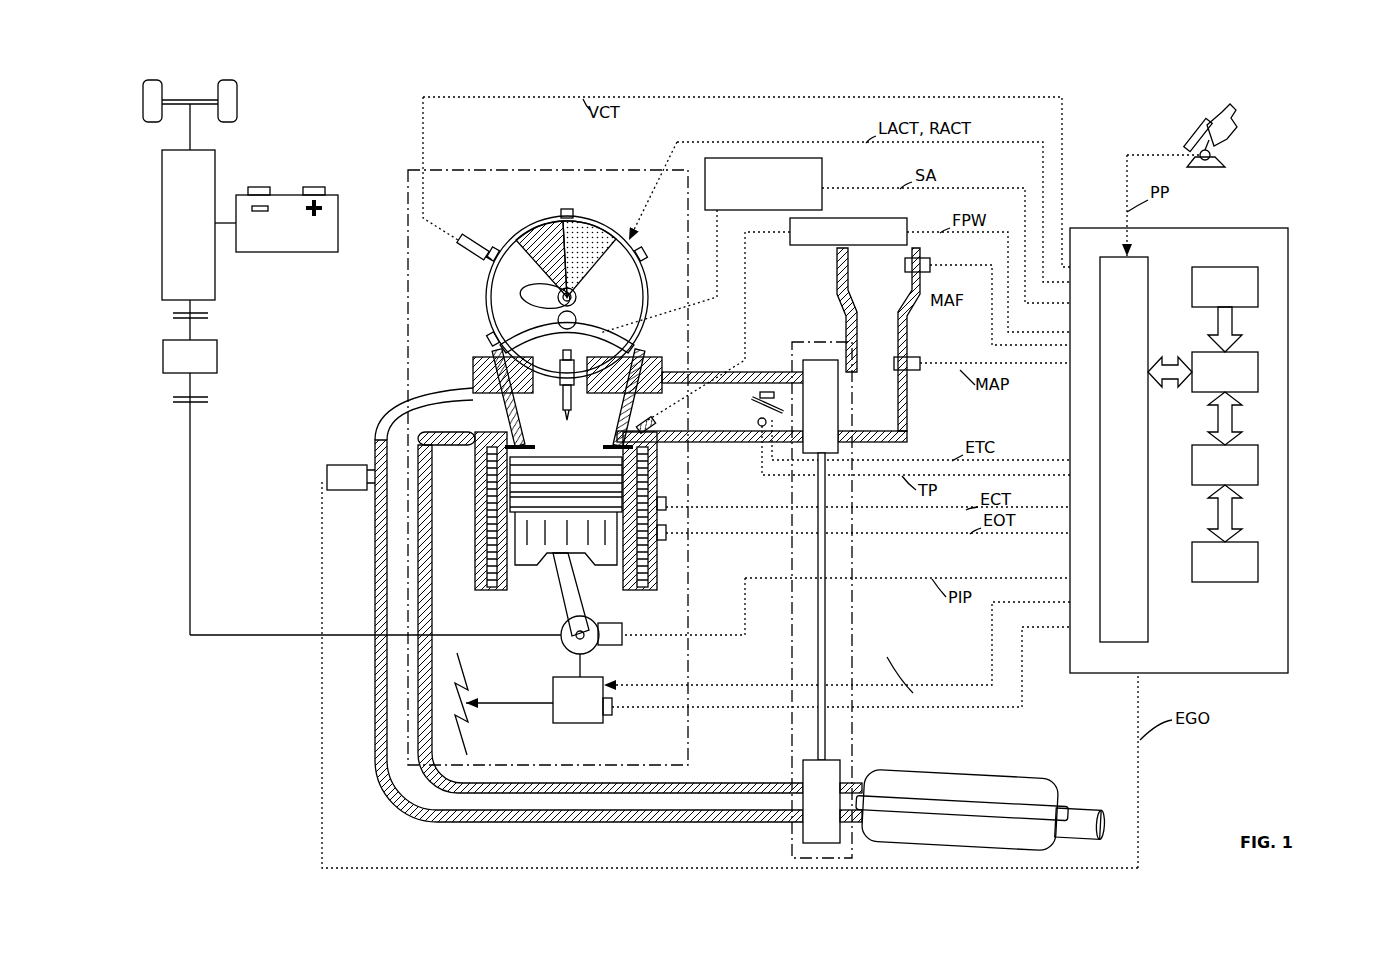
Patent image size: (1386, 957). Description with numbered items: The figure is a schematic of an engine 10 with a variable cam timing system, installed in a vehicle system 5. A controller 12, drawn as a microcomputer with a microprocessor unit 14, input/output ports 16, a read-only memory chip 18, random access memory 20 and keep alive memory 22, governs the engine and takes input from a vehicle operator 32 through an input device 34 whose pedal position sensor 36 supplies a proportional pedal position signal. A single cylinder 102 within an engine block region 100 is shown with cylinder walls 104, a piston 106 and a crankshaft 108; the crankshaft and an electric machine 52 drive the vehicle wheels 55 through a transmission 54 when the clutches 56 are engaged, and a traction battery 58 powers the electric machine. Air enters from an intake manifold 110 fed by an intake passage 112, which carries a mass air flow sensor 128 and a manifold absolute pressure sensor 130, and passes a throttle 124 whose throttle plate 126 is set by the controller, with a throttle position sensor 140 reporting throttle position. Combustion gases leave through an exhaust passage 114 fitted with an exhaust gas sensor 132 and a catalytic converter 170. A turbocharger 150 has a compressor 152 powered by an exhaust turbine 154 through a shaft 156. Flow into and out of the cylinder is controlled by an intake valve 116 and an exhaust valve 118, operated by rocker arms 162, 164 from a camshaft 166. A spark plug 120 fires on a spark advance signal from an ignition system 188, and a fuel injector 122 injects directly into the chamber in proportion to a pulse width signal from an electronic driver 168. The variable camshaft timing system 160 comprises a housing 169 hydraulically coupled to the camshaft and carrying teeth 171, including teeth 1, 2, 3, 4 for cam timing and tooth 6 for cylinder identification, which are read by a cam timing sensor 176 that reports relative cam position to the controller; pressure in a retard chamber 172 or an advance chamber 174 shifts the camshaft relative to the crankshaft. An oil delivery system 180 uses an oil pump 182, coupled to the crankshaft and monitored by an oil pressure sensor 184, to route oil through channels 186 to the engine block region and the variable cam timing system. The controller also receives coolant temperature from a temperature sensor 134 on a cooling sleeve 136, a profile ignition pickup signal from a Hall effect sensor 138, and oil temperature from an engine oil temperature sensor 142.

The tooth 1 is at (562, 212).
The tooth 2 is at (645, 259).
The tooth 3 is at (578, 374).
The tooth 4 is at (487, 341).
The vehicle system 5 is at (212, 778).
The tooth 6 is at (487, 264).
The engine 10 is at (1285, 731).
The controller 12 is at (1282, 238).
The microprocessor unit 14 is at (1260, 372).
The input/output ports 16 is at (1150, 262).
The read-only memory chip 18 is at (1260, 285).
The random access memory 20 is at (1260, 465).
The keep alive memory 22 is at (1260, 560).
The vehicle operator 32 is at (1240, 112).
The input device 34 is at (1188, 132).
The pedal position sensor 36 is at (1212, 158).
The electric machine 52 is at (217, 357).
The transmission 54 is at (216, 172).
The vehicle wheels 55 is at (238, 97).
The clutch 56 is at (173, 315).
The traction battery 58 is at (281, 252).
The engine block region 100 is at (408, 342).
The cylinder 102 is at (475, 460).
The cylinder walls 104 is at (500, 590).
The piston 106 is at (540, 572).
The crankshaft 108 is at (598, 593).
The intake manifold 110 is at (762, 407).
The intake passage 112 is at (878, 339).
The exhaust passage 114 is at (440, 415).
The intake valve 116 is at (625, 394).
The exhaust valve 118 is at (456, 394).
The spark plug 120 is at (560, 372).
The fuel injector 122 is at (682, 450).
The throttle 124 is at (765, 398).
The throttle plate 126 is at (757, 392).
The mass air flow sensor 128 is at (930, 266).
The manifold absolute pressure sensor 130 is at (915, 370).
The exhaust gas sensor 132 is at (327, 470).
The temperature sensor 134 is at (668, 503).
The cooling sleeve 136 is at (657, 585).
The Hall effect sensor 138 is at (636, 607).
The throttle position sensor 140 is at (758, 430).
The engine oil temperature sensor 142 is at (668, 537).
The turbocharger 150 is at (792, 726).
The compressor 152 is at (820, 406).
The exhaust turbine 154 is at (832, 801).
The shaft 156 is at (825, 603).
The variable camshaft timing system 160 is at (485, 226).
The rocker arm 162 is at (516, 345).
The rocker arm 164 is at (584, 330).
The camshaft 166 is at (530, 294).
The electronic driver 168 is at (874, 319).
The housing 169 is at (486, 300).
The catalytic converter 170 is at (900, 772).
The teeth 171 is at (640, 256).
The retard chamber 172 is at (580, 232).
The advance chamber 174 is at (532, 240).
The cam timing sensor 176 is at (458, 249).
The oil delivery system 180 is at (538, 724).
The oil pump 182 is at (826, 662).
The oil pressure sensor 184 is at (612, 713).
The channels 186 is at (500, 703).
The ignition system 188 is at (850, 245).